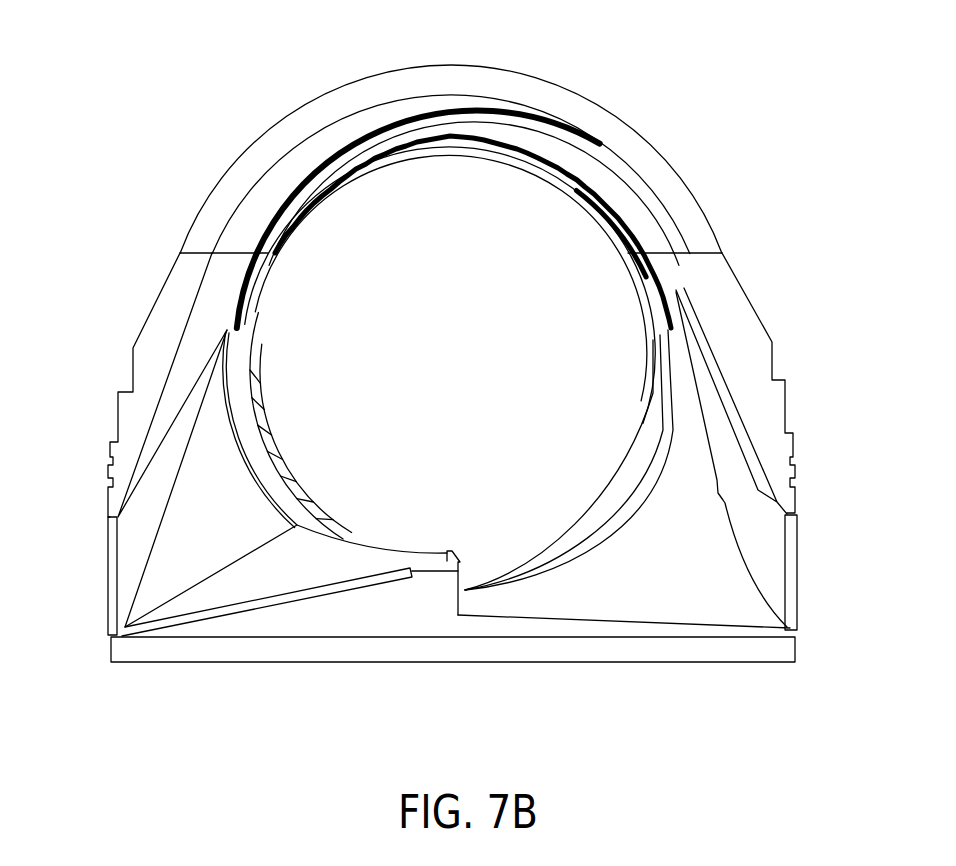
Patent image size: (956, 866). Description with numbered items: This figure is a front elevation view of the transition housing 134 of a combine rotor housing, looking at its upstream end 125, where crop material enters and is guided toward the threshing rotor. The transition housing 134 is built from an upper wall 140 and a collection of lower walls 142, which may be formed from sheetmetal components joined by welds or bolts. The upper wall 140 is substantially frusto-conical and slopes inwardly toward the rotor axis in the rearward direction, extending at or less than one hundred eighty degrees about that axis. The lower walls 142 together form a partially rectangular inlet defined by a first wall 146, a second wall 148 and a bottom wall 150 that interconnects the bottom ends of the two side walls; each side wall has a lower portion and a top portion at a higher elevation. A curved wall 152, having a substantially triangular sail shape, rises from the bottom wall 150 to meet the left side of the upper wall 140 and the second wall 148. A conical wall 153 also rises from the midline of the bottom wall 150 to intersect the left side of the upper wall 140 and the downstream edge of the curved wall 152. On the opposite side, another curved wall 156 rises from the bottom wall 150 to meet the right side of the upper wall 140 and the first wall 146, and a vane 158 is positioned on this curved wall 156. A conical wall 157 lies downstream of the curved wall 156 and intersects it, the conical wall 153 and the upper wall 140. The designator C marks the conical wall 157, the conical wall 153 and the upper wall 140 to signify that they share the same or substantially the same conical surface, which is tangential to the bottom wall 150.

The upstream end 125 is at (583, 112).
The upper wall 140 is at (327, 137).
The transition housing 134 is at (607, 162).
The designator C is at (492, 140).
The lower walls 142 is at (157, 450).
The first wall 146 is at (110, 567).
The second wall 148 is at (800, 552).
The bottom wall 150 is at (355, 613).
The curved wall 152 is at (707, 605).
The conical wall 153 is at (583, 513).
The curved wall 156 is at (165, 578).
The conical wall 157 is at (247, 430).
The vane 158 is at (345, 535).